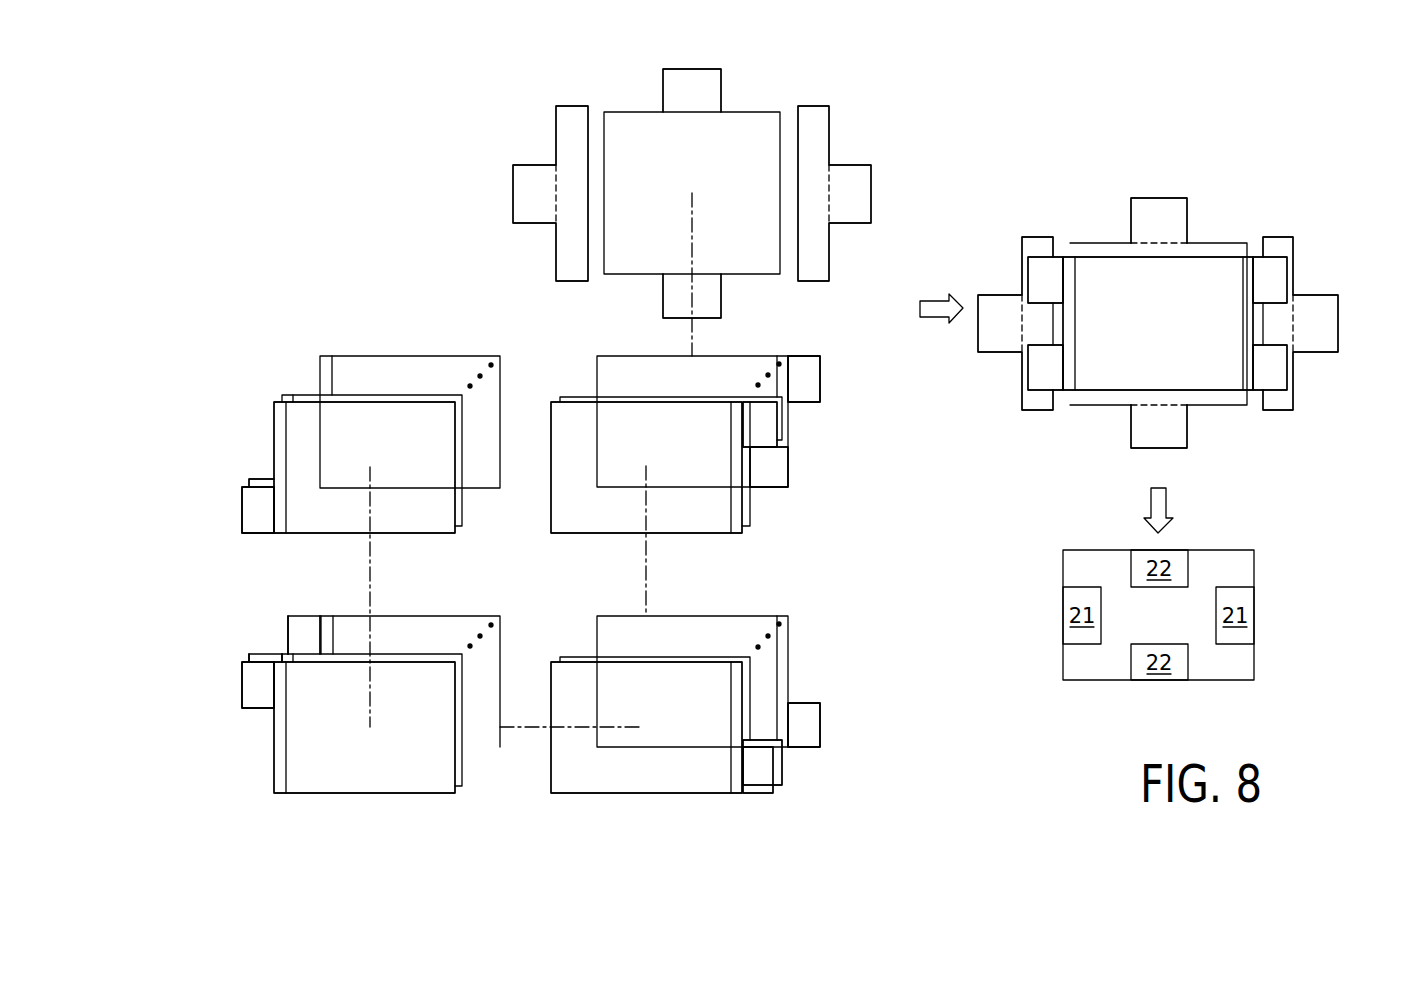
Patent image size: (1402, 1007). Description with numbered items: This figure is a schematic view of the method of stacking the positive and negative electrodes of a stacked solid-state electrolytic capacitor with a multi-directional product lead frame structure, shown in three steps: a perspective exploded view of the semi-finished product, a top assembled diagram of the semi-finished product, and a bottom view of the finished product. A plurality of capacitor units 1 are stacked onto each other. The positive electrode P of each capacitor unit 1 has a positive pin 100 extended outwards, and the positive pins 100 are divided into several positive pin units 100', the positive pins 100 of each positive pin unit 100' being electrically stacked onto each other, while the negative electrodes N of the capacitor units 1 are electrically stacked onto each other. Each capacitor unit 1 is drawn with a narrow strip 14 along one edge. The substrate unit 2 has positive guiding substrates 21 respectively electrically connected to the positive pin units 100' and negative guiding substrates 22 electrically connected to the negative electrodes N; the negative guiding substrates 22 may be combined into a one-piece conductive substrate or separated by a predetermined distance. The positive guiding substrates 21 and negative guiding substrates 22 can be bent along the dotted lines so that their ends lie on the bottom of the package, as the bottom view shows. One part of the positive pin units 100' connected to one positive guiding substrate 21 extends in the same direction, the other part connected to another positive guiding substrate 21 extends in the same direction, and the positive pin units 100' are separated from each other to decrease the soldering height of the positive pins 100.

The capacitor unit 1 is at (405, 358).
The substrate unit 2 is at (816, 70).
The tab 14 is at (327, 367).
The positive guiding substrate 21 is at (510, 190).
The negative guiding substrate 22 is at (721, 87).
The positive pin 100 is at (556, 578).
The positive pin unit 100' is at (791, 475).
The positive electrode P is at (241, 521).
The negative electrode N is at (419, 503).